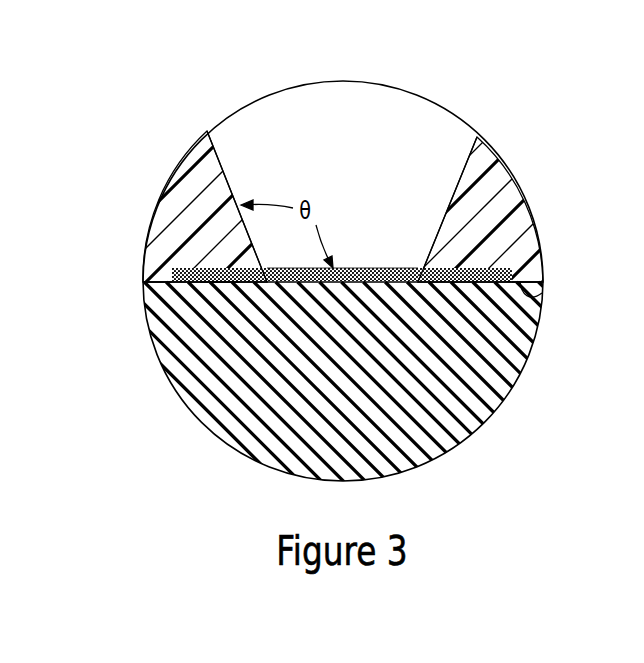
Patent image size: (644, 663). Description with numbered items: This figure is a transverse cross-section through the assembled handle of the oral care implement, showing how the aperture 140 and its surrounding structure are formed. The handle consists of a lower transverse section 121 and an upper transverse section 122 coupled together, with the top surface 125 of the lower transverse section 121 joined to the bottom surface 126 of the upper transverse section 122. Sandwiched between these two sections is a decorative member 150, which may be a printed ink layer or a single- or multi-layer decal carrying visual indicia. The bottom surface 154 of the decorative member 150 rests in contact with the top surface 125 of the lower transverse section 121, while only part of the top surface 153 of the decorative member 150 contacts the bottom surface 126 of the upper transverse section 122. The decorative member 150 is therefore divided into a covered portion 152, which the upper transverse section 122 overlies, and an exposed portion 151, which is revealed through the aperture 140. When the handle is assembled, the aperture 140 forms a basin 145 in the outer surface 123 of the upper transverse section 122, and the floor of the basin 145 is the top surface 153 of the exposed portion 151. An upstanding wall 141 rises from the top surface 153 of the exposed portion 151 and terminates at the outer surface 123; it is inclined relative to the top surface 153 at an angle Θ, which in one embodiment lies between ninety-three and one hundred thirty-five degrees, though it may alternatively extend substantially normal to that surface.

The lower transverse section 121 is at (430, 417).
The upper transverse section 122 is at (188, 193).
The outer surface 123 is at (498, 149).
The top surface 125 is at (146, 272).
The bottom surface 126 is at (543, 300).
The aperture 140 is at (298, 125).
The basin 145 is at (298, 125).
The upstanding wall 141 is at (219, 166).
The decorative member 150 is at (493, 250).
The exposed portion 151 is at (389, 267).
The covered portion 152 is at (192, 266).
The top surface 153 is at (347, 267).
The bottom surface 154 is at (222, 282).